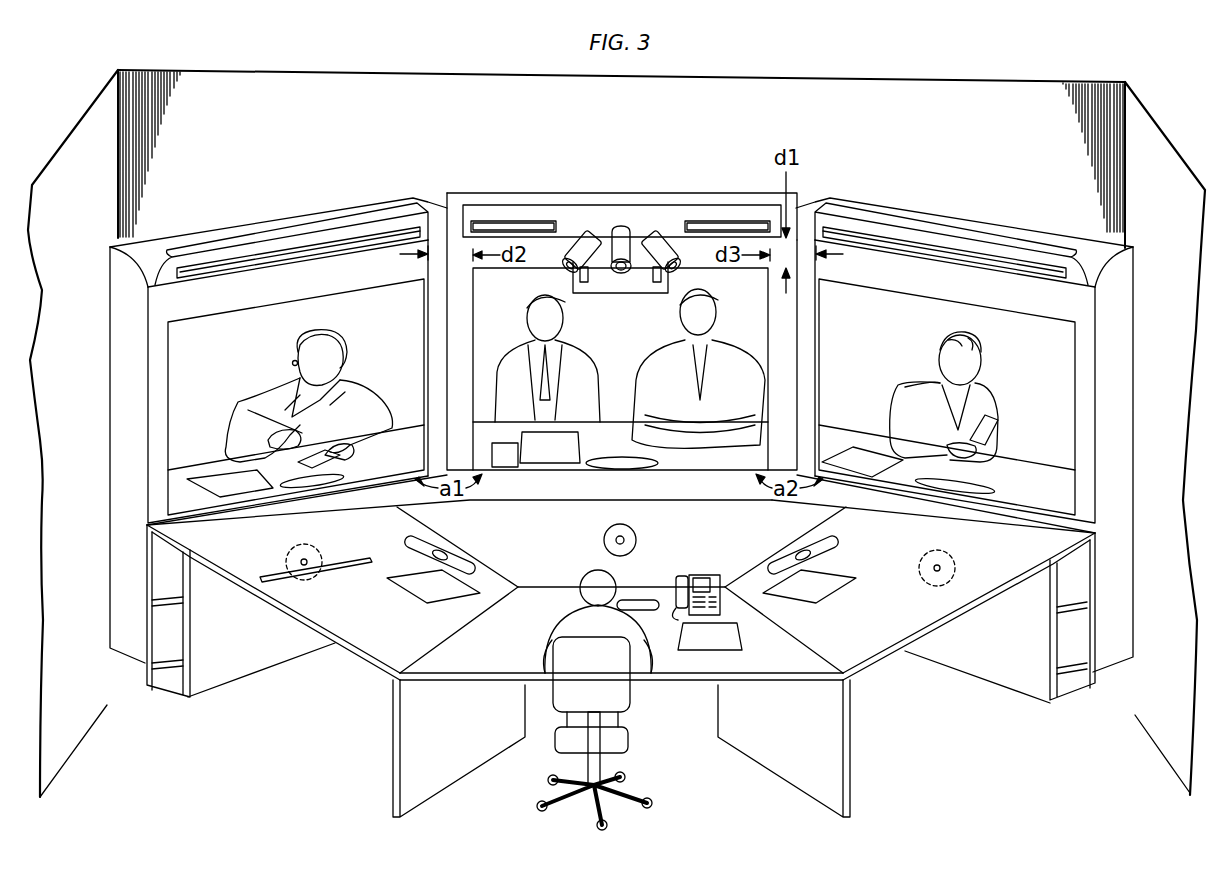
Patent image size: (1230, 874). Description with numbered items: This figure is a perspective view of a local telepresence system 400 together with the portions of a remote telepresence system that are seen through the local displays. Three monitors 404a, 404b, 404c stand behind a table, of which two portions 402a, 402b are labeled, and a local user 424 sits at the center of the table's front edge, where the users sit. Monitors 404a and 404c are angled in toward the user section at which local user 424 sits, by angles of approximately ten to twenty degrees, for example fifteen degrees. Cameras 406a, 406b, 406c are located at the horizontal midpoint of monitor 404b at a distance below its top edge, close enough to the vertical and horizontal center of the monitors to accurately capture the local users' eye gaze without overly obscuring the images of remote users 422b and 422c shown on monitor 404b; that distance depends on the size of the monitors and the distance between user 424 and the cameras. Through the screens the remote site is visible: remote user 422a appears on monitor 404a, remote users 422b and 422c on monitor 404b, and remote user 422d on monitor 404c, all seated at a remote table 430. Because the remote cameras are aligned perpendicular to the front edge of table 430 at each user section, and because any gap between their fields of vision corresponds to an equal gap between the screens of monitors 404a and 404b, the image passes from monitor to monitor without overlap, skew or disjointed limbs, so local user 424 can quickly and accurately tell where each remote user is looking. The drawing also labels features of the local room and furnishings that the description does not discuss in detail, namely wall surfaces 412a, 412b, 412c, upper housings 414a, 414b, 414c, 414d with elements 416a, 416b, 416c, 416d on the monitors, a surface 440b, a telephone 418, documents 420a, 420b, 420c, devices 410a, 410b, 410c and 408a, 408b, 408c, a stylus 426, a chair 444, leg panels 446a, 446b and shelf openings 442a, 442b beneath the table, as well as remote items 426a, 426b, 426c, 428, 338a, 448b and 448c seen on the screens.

The telepresence system 400 is at (910, 65).
The table 402a is at (828, 646).
The table 402b is at (160, 527).
The monitor 404a is at (357, 328).
The monitor 404b is at (627, 330).
The monitor 404c is at (837, 334).
The camera 406a is at (595, 237).
The camera 406b is at (622, 225).
The camera 406c is at (647, 237).
The sensor 408a is at (318, 574).
The sensor 408b is at (604, 532).
The sensor 408c is at (922, 578).
The input device 410a is at (470, 550).
The input device 410b is at (645, 598).
The input device 410c is at (775, 553).
The left wall 412a is at (59, 209).
The back wall 412b is at (217, 130).
The right wall 412c is at (1139, 228).
The speaker housing 414a is at (325, 240).
The speaker housing 414b is at (521, 220).
The speaker housing 414c is at (727, 163).
The speaker housing 414d is at (1040, 272).
The speaker 416a is at (253, 237).
The speaker 416b is at (478, 206).
The speaker 416c is at (740, 206).
The speaker 416d is at (978, 242).
The telephone 418 is at (700, 577).
The document 420a is at (437, 594).
The document 420b is at (742, 631).
The document 420c is at (860, 572).
The remote user 422a is at (262, 390).
The remote user 422b is at (582, 377).
The remote user 422c is at (725, 352).
The remote user 422d is at (990, 400).
The local user 424 is at (555, 630).
The stylus 426 is at (233, 571).
The remote document 426a is at (213, 480).
The remote document 426b is at (565, 443).
The remote document 426c is at (860, 455).
The remote telephone 428 is at (497, 440).
The table 430 is at (612, 424).
The remote input device 338a is at (345, 478).
The table surface 440b is at (522, 572).
The left shelf 442a is at (158, 643).
The right shelf 442b is at (1082, 655).
The chair 444 is at (630, 735).
The left leg panel 446a is at (449, 778).
The right leg panel 446b is at (795, 778).
The remote input device 448b is at (658, 463).
The remote input device 448c is at (985, 490).